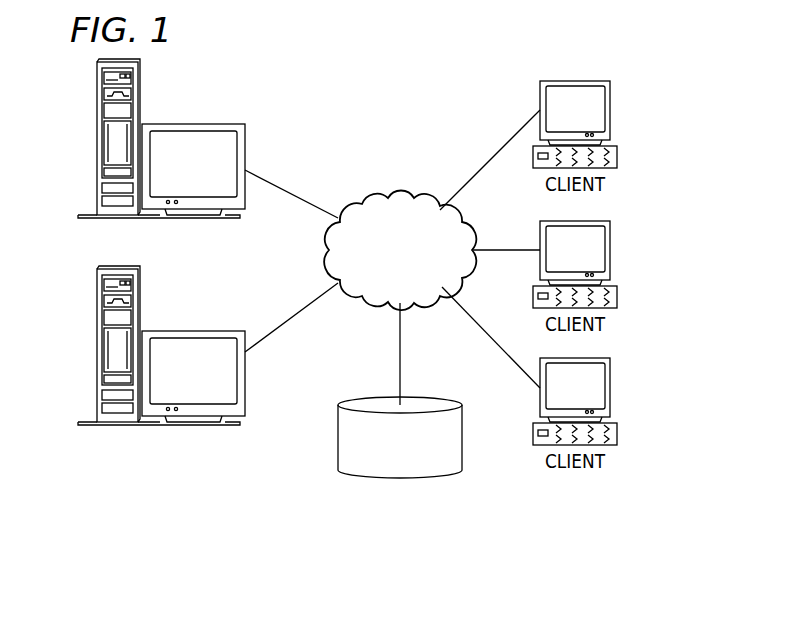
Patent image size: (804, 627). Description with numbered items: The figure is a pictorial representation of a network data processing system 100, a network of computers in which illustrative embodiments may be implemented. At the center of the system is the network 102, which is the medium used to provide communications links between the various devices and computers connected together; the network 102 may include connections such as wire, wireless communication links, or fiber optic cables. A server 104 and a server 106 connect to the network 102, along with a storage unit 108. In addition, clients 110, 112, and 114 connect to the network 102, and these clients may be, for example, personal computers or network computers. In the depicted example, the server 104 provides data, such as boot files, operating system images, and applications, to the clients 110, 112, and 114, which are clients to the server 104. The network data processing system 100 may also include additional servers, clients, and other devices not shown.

The network data processing system 100 is at (448, 90).
The network 102 is at (371, 198).
The server 104 is at (95, 138).
The server 106 is at (95, 345).
The storage unit 108 is at (385, 478).
The client 110 is at (610, 110).
The client 112 is at (610, 250).
The client 114 is at (610, 390).